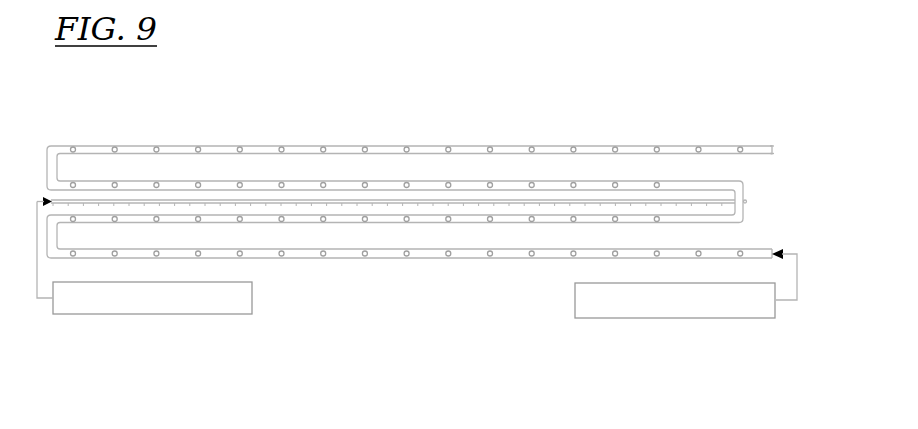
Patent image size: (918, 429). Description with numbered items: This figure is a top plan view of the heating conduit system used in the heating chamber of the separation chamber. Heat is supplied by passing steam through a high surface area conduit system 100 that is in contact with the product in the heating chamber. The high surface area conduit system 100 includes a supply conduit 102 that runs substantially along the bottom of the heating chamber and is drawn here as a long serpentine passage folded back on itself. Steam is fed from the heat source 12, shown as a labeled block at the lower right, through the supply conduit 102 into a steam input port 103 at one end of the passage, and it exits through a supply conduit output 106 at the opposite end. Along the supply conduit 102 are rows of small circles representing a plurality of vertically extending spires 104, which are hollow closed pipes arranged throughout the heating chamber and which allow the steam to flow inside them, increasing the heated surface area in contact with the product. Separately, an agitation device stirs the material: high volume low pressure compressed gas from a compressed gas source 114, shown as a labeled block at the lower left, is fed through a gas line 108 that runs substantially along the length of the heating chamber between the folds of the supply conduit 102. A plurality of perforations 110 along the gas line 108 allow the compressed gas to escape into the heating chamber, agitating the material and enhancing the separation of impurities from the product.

The high surface area conduit system 100 is at (101, 123).
The supply conduit 102 is at (378, 259).
The spires 104 is at (490, 147).
The supply conduit output 106 is at (777, 150).
The steam input port 103 is at (777, 251).
The gas line 108 is at (304, 199).
The perforations 110 is at (352, 201).
The compressed gas source 114 is at (95, 315).
The heat source 12 is at (608, 319).